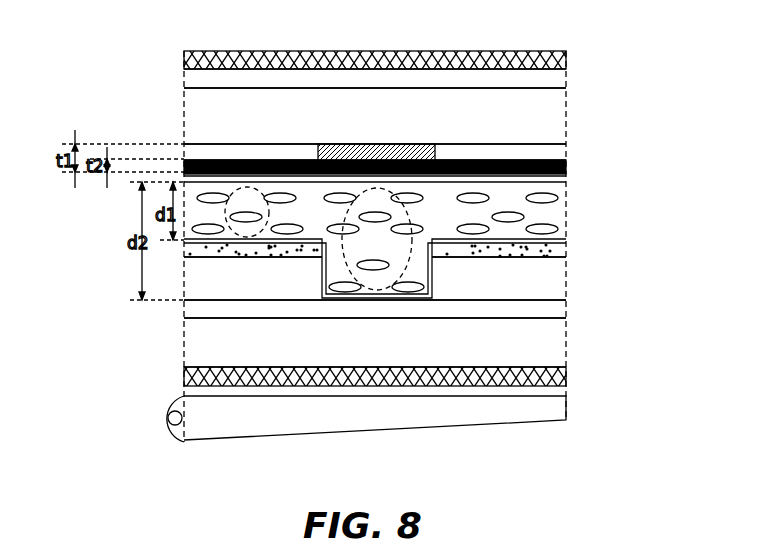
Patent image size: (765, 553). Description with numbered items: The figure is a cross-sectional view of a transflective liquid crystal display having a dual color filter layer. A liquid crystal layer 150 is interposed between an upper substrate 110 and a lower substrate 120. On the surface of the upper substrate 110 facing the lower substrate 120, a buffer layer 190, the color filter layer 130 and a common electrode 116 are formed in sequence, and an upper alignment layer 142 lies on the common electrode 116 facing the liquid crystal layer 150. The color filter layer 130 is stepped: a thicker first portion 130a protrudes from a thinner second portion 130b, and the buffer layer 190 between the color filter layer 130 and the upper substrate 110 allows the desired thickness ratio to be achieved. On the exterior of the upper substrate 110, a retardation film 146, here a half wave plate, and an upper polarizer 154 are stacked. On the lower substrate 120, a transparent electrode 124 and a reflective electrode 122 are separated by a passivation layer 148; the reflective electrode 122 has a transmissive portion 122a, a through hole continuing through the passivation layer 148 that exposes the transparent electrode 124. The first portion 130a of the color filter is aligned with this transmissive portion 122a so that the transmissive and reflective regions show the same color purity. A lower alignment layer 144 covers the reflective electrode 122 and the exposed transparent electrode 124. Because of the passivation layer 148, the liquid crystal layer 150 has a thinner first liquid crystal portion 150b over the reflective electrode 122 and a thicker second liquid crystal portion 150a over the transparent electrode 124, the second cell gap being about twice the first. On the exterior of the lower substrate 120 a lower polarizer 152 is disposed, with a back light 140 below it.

The upper polarizer 154 is at (566, 52).
The retardation film 146 is at (558, 78).
The upper substrate 110 is at (555, 115).
The buffer layer 190 is at (562, 152).
The common electrode 116 is at (563, 175).
The upper alignment layer 142 is at (563, 184).
The liquid crystal layer 150 is at (553, 213).
The second liquid crystal portion 150a is at (375, 290).
The first liquid crystal portion 150b is at (250, 235).
The lower alignment layer 144 is at (563, 243).
The reflective electrode 122 is at (560, 252).
The transmissive portion 122a is at (333, 251).
The passivation layer 148 is at (548, 278).
The transparent electrode 124 is at (550, 310).
The lower substrate 120 is at (552, 349).
The lower polarizer 152 is at (562, 377).
The back light 140 is at (557, 408).
The color filter layer 130 is at (112, 92).
The first portion 130a is at (320, 145).
The second portion 130b is at (236, 159).